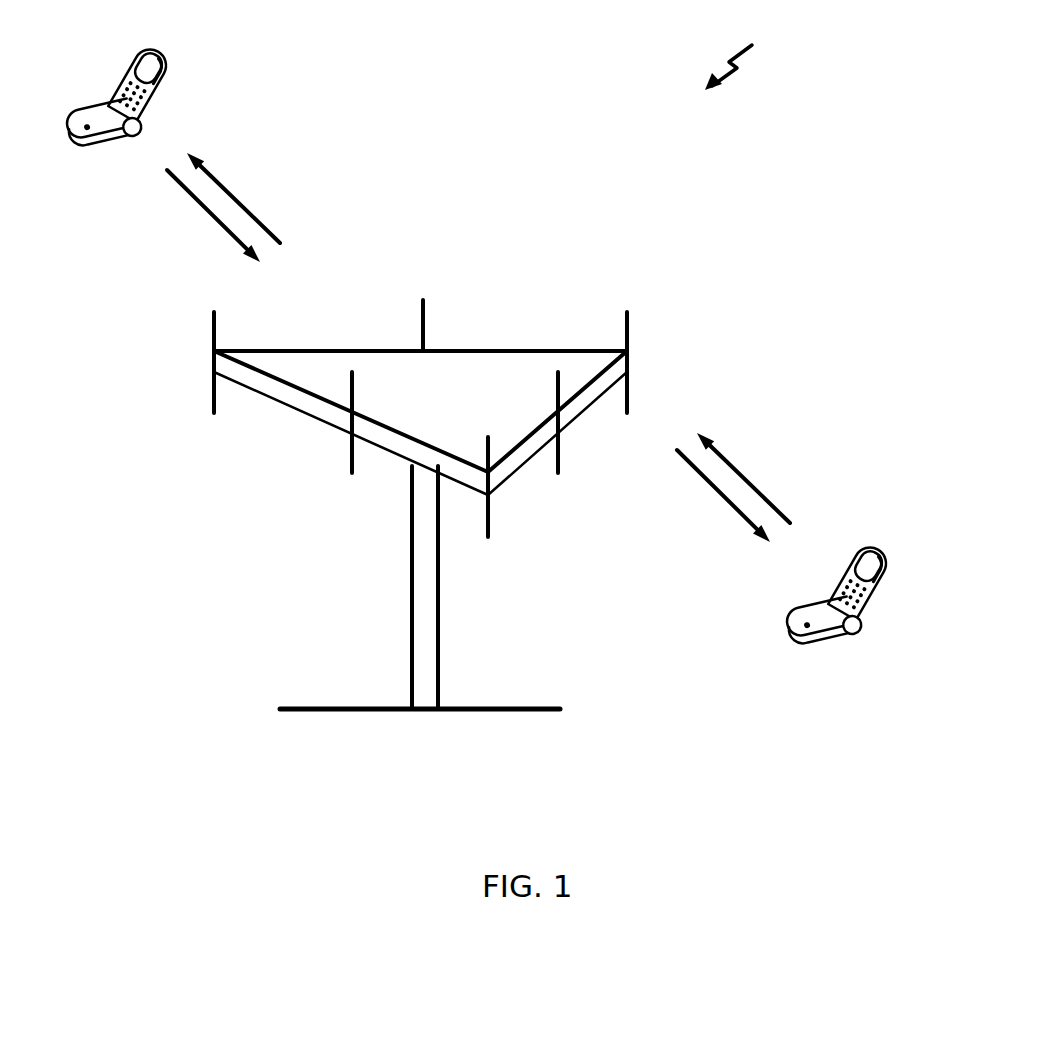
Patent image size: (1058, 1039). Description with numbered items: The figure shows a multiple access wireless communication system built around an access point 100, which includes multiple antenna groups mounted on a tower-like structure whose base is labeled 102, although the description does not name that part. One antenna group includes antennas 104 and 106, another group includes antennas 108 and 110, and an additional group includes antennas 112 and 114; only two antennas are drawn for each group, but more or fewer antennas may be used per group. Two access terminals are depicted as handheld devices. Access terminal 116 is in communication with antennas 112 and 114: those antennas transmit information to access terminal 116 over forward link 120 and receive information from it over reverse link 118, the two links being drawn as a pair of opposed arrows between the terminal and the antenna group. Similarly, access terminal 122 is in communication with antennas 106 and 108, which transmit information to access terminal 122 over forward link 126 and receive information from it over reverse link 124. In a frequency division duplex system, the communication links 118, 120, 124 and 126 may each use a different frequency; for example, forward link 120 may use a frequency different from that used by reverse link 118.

The access point 100 is at (749, 56).
The base station 102 is at (423, 712).
The antenna 104 is at (628, 322).
The antenna 106 is at (559, 462).
The antenna 108 is at (489, 532).
The antenna 110 is at (352, 468).
The antenna 112 is at (215, 322).
The antenna 114 is at (424, 305).
The access terminal 116 is at (149, 55).
The reverse link 118 is at (233, 196).
The forward link 120 is at (211, 218).
The access terminal 122 is at (869, 553).
The reverse link 124 is at (721, 500).
The forward link 126 is at (743, 478).